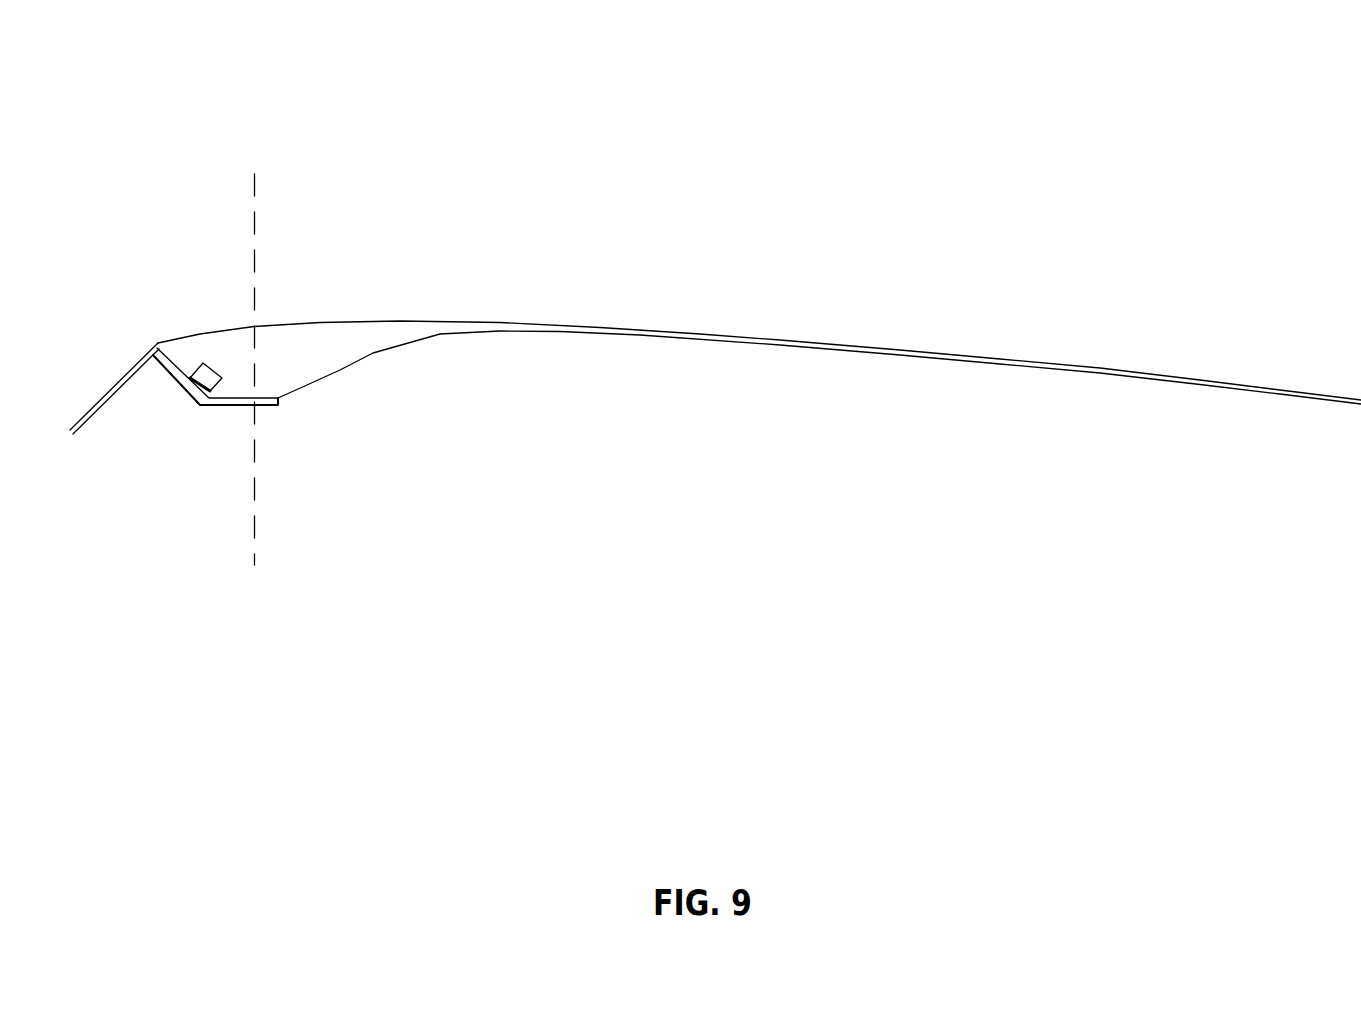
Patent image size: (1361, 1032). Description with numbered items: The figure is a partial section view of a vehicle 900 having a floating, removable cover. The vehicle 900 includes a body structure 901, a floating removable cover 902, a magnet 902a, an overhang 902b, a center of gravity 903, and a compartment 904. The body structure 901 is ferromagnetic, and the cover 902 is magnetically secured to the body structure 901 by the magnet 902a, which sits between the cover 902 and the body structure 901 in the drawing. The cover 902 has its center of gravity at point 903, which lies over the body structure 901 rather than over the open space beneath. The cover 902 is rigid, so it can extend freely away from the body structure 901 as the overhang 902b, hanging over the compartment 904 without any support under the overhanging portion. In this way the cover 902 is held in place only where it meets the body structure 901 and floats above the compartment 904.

The vehicle 900 is at (136, 93).
The body structure 901 is at (187, 392).
The floating removable cover 902 is at (715, 358).
The magnet 902a is at (197, 366).
The overhang 902b is at (609, 418).
The center of gravity 903 is at (255, 263).
The compartment 904 is at (442, 530).